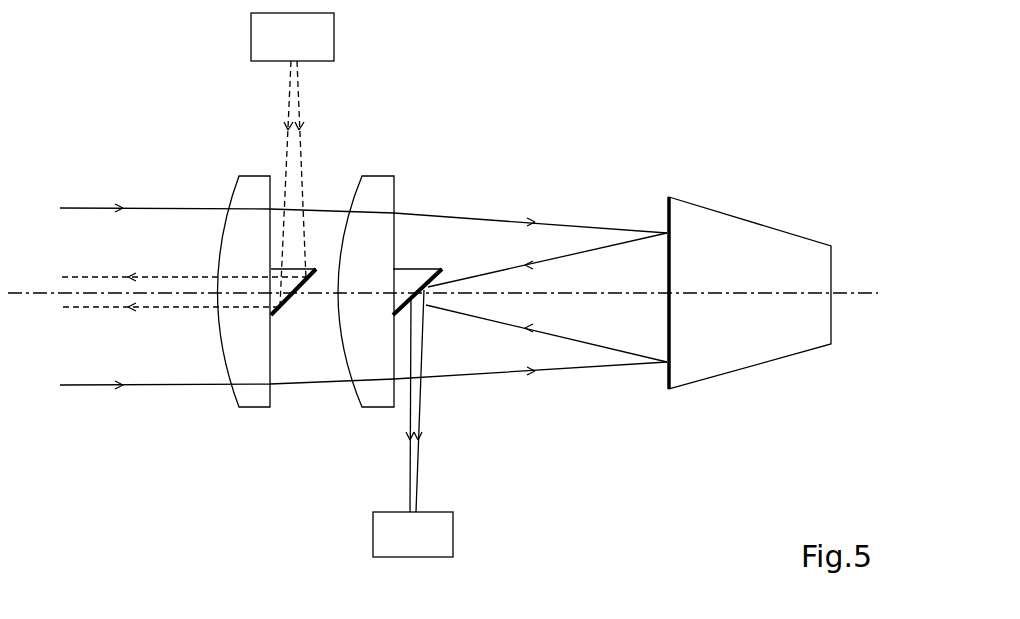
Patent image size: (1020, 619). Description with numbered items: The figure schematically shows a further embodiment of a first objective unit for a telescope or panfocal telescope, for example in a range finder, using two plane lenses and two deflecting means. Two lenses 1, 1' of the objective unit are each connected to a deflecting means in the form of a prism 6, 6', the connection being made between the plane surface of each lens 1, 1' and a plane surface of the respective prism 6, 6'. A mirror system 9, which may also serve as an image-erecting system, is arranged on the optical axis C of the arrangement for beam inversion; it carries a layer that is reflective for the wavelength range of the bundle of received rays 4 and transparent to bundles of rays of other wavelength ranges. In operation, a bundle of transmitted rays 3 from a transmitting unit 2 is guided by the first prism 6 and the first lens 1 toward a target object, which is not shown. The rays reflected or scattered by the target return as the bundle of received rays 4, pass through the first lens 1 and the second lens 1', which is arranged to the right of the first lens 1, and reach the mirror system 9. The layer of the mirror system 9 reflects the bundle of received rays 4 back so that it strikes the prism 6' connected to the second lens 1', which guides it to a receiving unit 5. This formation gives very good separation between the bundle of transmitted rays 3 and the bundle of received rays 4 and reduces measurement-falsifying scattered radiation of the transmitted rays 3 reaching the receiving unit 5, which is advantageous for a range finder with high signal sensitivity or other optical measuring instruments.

The first lens 1 is at (244, 234).
The second lens 1' is at (366, 234).
The transmitting unit 2 is at (312, 49).
The bundle of transmitted rays 3 is at (100, 278).
The bundle of received rays 4 is at (105, 385).
The receiving unit 5 is at (393, 548).
The first prism 6 is at (308, 235).
The second prism 6' is at (428, 235).
The mirror system 9 is at (692, 210).
The optical axis C is at (731, 292).